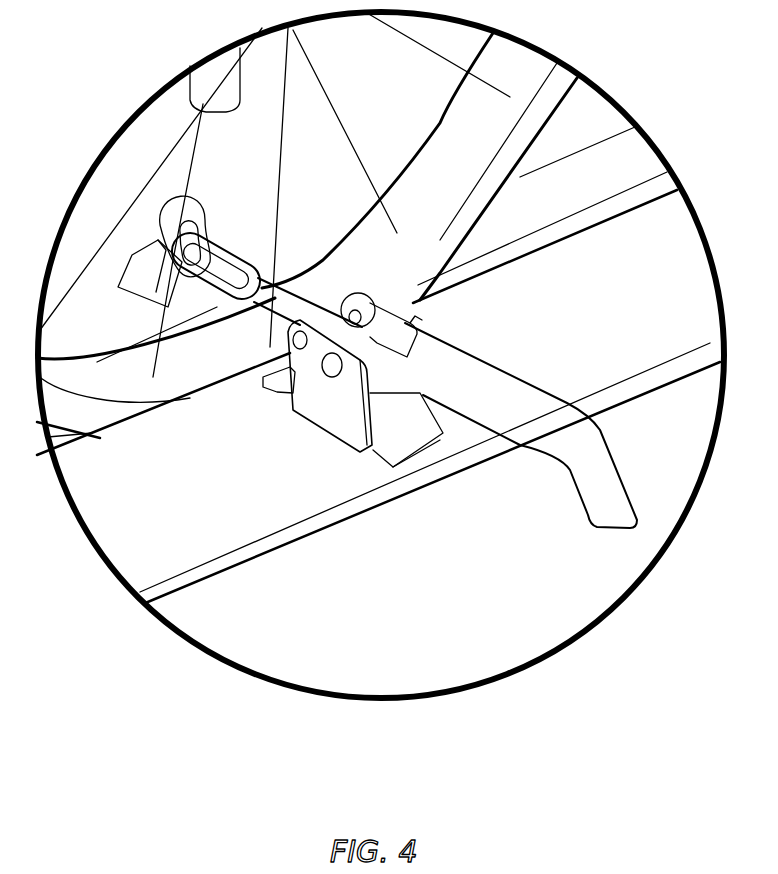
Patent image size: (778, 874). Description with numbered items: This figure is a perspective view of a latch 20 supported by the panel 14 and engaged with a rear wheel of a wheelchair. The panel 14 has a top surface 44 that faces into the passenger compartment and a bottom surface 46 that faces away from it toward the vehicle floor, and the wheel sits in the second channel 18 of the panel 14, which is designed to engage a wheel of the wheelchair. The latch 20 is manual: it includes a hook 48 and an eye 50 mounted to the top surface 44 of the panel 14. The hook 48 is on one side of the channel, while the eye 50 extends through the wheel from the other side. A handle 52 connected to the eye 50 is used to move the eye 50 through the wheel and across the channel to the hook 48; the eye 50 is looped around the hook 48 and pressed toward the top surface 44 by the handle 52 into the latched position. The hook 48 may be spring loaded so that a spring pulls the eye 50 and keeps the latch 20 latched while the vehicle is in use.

The panel 14 is at (305, 543).
The second channel 18 is at (603, 163).
The latch 20 is at (549, 465).
The top surface 44 is at (137, 533).
The bottom surface 46 is at (640, 393).
The hook 48 is at (160, 213).
The eye 50 is at (232, 262).
The handle 52 is at (510, 390).